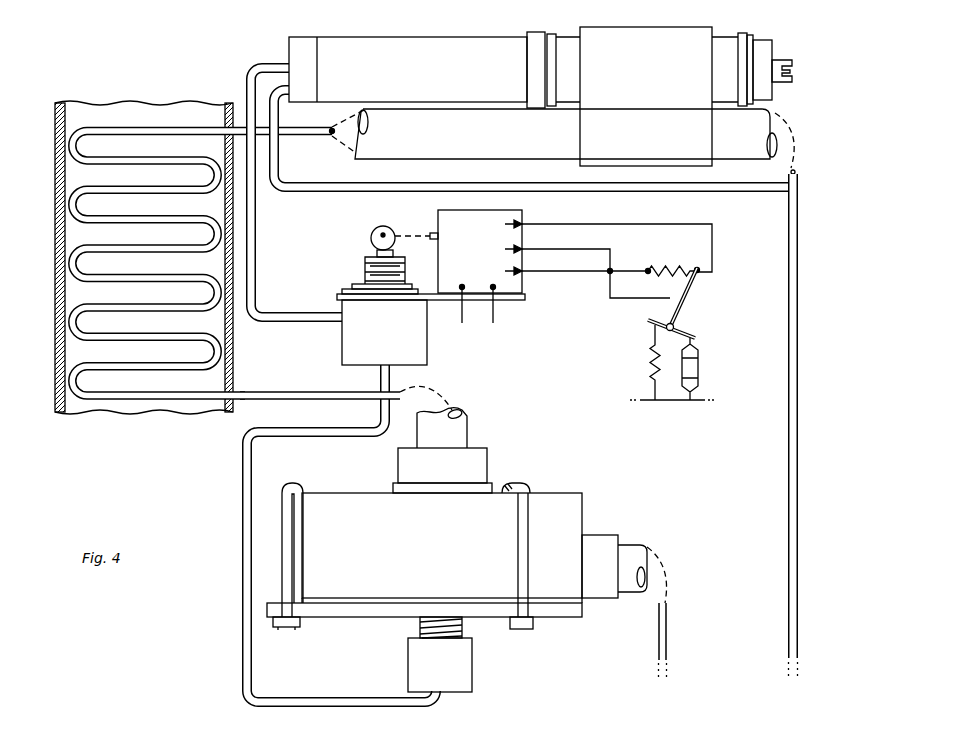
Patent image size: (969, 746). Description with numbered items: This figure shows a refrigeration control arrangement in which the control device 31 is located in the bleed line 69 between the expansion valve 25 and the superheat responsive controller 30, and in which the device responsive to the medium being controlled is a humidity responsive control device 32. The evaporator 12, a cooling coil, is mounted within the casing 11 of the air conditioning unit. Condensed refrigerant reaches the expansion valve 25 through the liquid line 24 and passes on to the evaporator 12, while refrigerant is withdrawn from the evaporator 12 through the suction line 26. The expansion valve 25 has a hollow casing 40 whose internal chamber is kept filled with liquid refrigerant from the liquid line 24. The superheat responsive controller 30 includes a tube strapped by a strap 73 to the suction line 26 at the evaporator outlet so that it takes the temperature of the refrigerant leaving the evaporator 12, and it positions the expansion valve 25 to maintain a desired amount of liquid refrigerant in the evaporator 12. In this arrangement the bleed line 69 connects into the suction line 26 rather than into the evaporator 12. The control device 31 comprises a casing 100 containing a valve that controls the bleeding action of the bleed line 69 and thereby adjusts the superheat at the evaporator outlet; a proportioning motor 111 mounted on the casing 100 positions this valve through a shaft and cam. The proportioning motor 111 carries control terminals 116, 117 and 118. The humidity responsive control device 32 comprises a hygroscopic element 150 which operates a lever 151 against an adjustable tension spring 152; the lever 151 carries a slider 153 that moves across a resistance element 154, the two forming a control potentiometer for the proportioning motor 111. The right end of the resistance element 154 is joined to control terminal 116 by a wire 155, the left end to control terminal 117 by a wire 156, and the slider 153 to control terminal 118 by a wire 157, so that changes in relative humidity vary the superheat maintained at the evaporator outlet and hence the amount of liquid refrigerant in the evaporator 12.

The casing 11 is at (55, 241).
The evaporator 12 is at (132, 400).
The liquid line 24 is at (277, 393).
The expansion valve 25 is at (457, 550).
The suction line 26 is at (425, 160).
The superheat responsive controller 30 is at (268, 41).
The control device 31 is at (434, 323).
The humidity responsive control device 32 is at (643, 303).
The hollow casing 40 is at (445, 558).
The bleed line 69 is at (252, 249).
The strap 73 is at (655, 158).
The casing 100 is at (400, 341).
The proportioning motor 111 is at (472, 259).
The control terminal 116 is at (593, 244).
The control terminal 117 is at (563, 271).
The control terminal 118 is at (574, 269).
The hygroscopic element 150 is at (698, 365).
The lever 151 is at (677, 329).
The adjustable tension spring 152 is at (650, 372).
The slider 153 is at (693, 283).
The resistance element 154 is at (667, 266).
The wire 155 is at (664, 227).
The wire 156 is at (553, 273).
The wire 157 is at (628, 299).